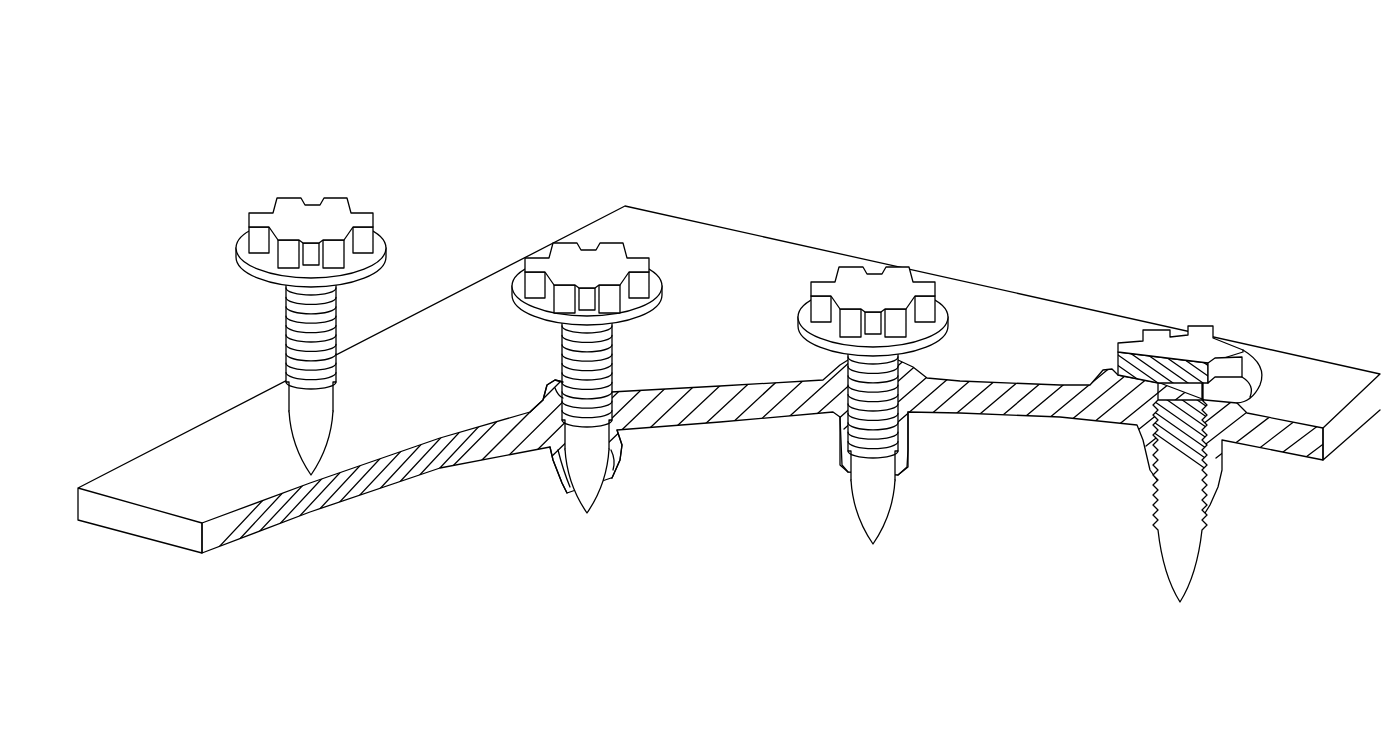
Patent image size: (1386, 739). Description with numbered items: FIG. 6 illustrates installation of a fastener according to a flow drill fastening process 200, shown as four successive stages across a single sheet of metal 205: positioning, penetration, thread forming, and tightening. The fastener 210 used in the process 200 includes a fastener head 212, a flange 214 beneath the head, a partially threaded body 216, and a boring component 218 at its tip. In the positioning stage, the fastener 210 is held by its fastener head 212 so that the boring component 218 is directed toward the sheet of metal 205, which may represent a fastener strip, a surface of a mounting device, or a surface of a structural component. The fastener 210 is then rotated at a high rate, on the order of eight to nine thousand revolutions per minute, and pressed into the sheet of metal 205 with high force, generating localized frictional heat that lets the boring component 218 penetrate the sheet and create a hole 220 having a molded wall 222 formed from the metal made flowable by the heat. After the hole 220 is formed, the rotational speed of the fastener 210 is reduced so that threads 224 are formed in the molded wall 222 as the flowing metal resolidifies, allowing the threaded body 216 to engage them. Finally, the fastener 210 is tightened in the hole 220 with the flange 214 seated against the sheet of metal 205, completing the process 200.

The flow drill fastening process 200 is at (233, 94).
The sheet of metal 205 is at (691, 240).
The fastener 210 is at (307, 187).
The fastener head 212 is at (250, 226).
The flange 214 is at (246, 250).
The threaded body 216 is at (287, 335).
The boring component 218 is at (287, 430).
The hole 220 is at (620, 438).
The molded wall 222 is at (562, 402).
The threads 224 is at (893, 437).